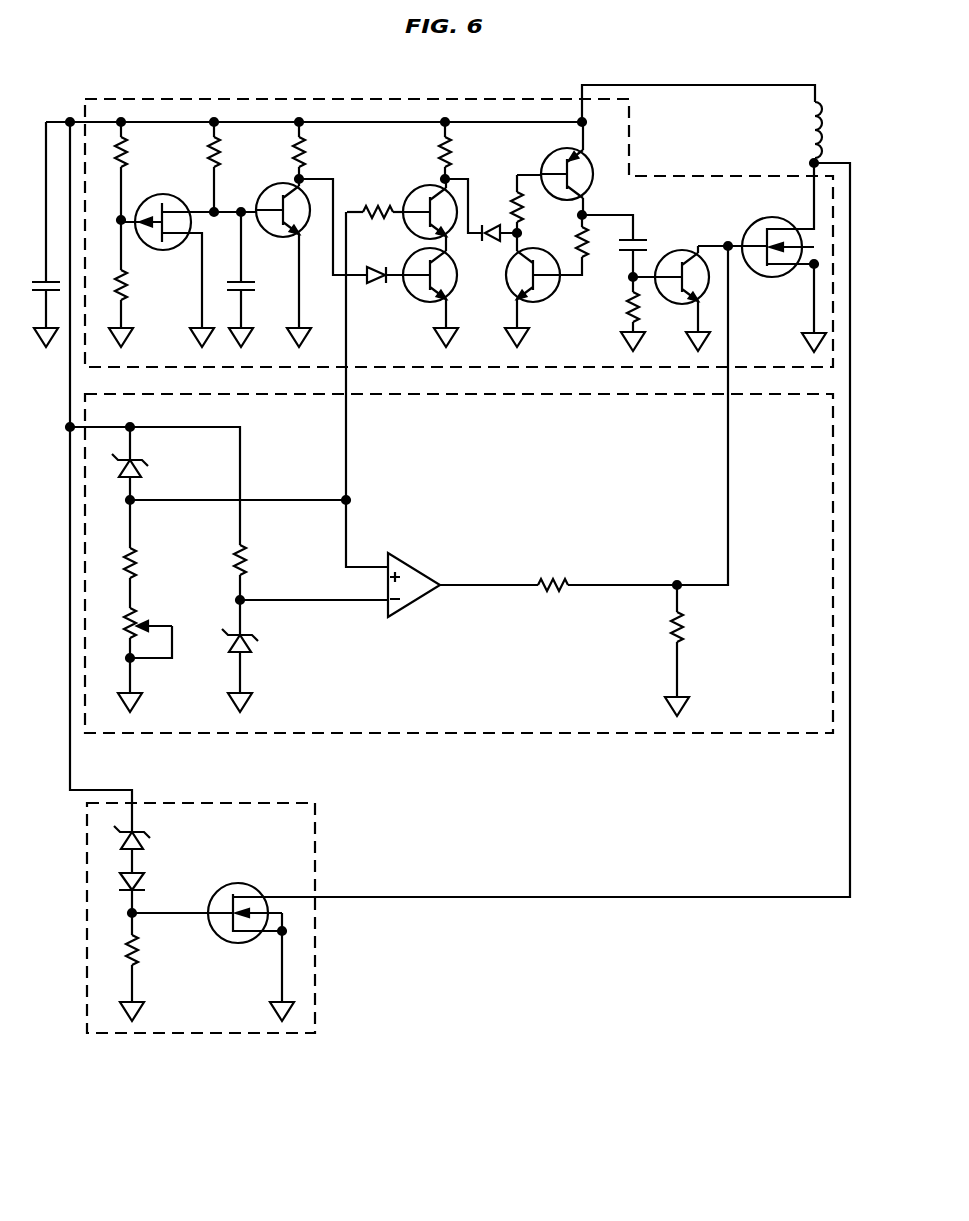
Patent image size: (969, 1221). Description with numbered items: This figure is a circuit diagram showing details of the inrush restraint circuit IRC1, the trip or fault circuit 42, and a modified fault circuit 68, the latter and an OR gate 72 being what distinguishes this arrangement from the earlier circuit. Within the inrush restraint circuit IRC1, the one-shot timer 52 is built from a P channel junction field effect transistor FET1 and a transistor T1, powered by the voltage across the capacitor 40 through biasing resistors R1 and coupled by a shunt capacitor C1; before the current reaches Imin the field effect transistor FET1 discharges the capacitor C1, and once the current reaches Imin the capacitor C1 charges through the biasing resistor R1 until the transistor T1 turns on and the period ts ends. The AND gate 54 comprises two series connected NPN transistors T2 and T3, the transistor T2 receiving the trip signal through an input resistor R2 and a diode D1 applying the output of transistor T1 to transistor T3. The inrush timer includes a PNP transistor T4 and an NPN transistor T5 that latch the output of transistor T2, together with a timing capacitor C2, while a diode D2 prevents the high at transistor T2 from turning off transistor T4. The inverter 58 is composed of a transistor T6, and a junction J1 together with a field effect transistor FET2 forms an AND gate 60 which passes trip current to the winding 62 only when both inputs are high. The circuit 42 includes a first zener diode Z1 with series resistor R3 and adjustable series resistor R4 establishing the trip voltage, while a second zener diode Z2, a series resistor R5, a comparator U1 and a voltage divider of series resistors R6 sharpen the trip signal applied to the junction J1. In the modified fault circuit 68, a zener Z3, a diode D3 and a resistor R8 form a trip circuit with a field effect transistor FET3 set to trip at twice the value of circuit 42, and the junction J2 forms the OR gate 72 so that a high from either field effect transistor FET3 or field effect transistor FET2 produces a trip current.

The inrush restraint circuit IRC1 is at (348, 100).
The capacitor 40 is at (37, 295).
The trip circuit 42 is at (366, 743).
The one-shot timer 52 is at (191, 166).
The AND gate 54 is at (507, 168).
The inverter 58 is at (685, 230).
The AND gate 60 is at (743, 210).
The trip winding 62 is at (811, 113).
The modified fault circuit 68 is at (318, 852).
The OR gate 72 is at (810, 162).
The junction J1 is at (727, 242).
The junction J2 is at (817, 162).
The biasing resistor R1 is at (126, 163).
The input resistor R2 is at (370, 205).
The series resistor R3 is at (138, 558).
The adjustable series resistor R4 is at (125, 625).
The series resistor R5 is at (248, 566).
The series resistor R6 is at (546, 580).
The resistor R8 is at (140, 960).
The shunt capacitor C1 is at (247, 291).
The timing capacitor C2 is at (622, 245).
The diode D1 is at (376, 266).
The diode D2 is at (497, 246).
The diode D3 is at (150, 877).
The first zener diode Z1 is at (150, 462).
The second zener diode Z2 is at (250, 648).
The zener Z3 is at (152, 832).
The transistor T1 is at (262, 236).
The NPN transistor T2 is at (416, 190).
The NPN transistor T3 is at (420, 300).
The PNP transistor T4 is at (590, 171).
The NPN transistor T5 is at (545, 300).
The transistor T6 is at (675, 305).
The P channel junction field effect transistor FET1 is at (142, 247).
The field effect transistor FET2 is at (768, 283).
The field effect transistor FET3 is at (231, 887).
The comparator U1 is at (418, 600).